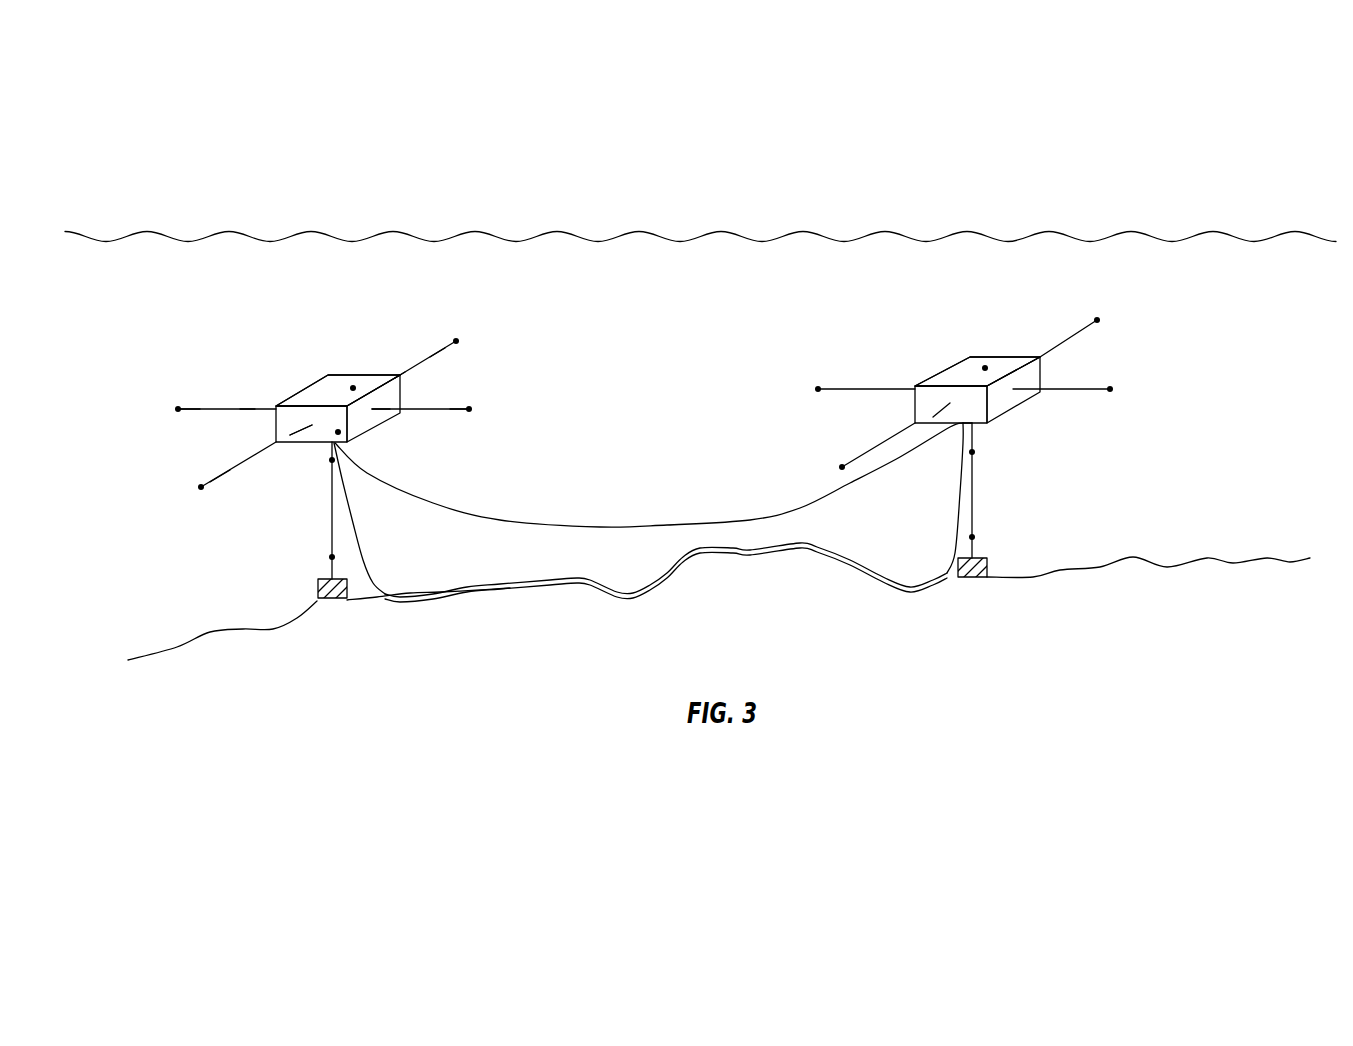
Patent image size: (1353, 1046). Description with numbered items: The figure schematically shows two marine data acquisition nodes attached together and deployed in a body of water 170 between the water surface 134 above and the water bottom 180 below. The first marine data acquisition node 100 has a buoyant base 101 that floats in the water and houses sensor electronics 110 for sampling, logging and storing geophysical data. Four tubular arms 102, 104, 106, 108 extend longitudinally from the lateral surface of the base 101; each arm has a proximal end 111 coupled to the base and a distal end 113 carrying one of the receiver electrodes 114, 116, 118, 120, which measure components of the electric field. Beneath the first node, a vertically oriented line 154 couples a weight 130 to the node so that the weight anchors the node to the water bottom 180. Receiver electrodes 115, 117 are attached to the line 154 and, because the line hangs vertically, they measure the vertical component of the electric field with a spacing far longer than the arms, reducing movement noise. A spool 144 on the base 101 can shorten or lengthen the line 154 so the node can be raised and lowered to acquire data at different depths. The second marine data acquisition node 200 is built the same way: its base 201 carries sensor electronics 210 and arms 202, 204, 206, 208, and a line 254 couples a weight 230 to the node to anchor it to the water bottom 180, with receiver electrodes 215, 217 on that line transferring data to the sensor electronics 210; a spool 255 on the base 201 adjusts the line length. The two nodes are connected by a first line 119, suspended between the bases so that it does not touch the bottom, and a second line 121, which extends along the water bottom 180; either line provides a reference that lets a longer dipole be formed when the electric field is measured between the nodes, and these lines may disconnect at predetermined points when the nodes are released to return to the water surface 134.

The first marine data acquisition node 100 is at (325, 393).
The base 101 is at (308, 398).
The arm 102 is at (422, 362).
The arm 104 is at (450, 412).
The arm 106 is at (235, 462).
The arm 108 is at (220, 407).
The sensor electronics 110 is at (353, 386).
The proximal end 111 is at (247, 407).
The distal end 113 is at (435, 365).
The receiver electrode 114 is at (458, 340).
The receiver electrode 115 is at (331, 462).
The receiver electrode 116 is at (471, 408).
The receiver electrode 117 is at (331, 558).
The receiver electrode 118 is at (199, 488).
The first line 119 is at (597, 523).
The receiver electrode 120 is at (176, 408).
The second line 121 is at (580, 577).
The weight 130 is at (318, 588).
The water surface 134 is at (721, 232).
The spool 144 is at (340, 434).
The line 154 is at (332, 510).
The body of water 170 is at (690, 330).
The water bottom 180 is at (690, 644).
The second marine data acquisition node 200 is at (963, 313).
The base 201 is at (953, 377).
The arm 202 is at (1072, 337).
The arm 204 is at (1088, 393).
The arm 206 is at (883, 438).
The arm 208 is at (853, 388).
The sensor electronics 210 is at (986, 366).
The receiver electrode 215 is at (974, 453).
The receiver electrode 217 is at (974, 538).
The weight 230 is at (973, 578).
The line 254 is at (972, 490).
The spool 255 is at (983, 423).